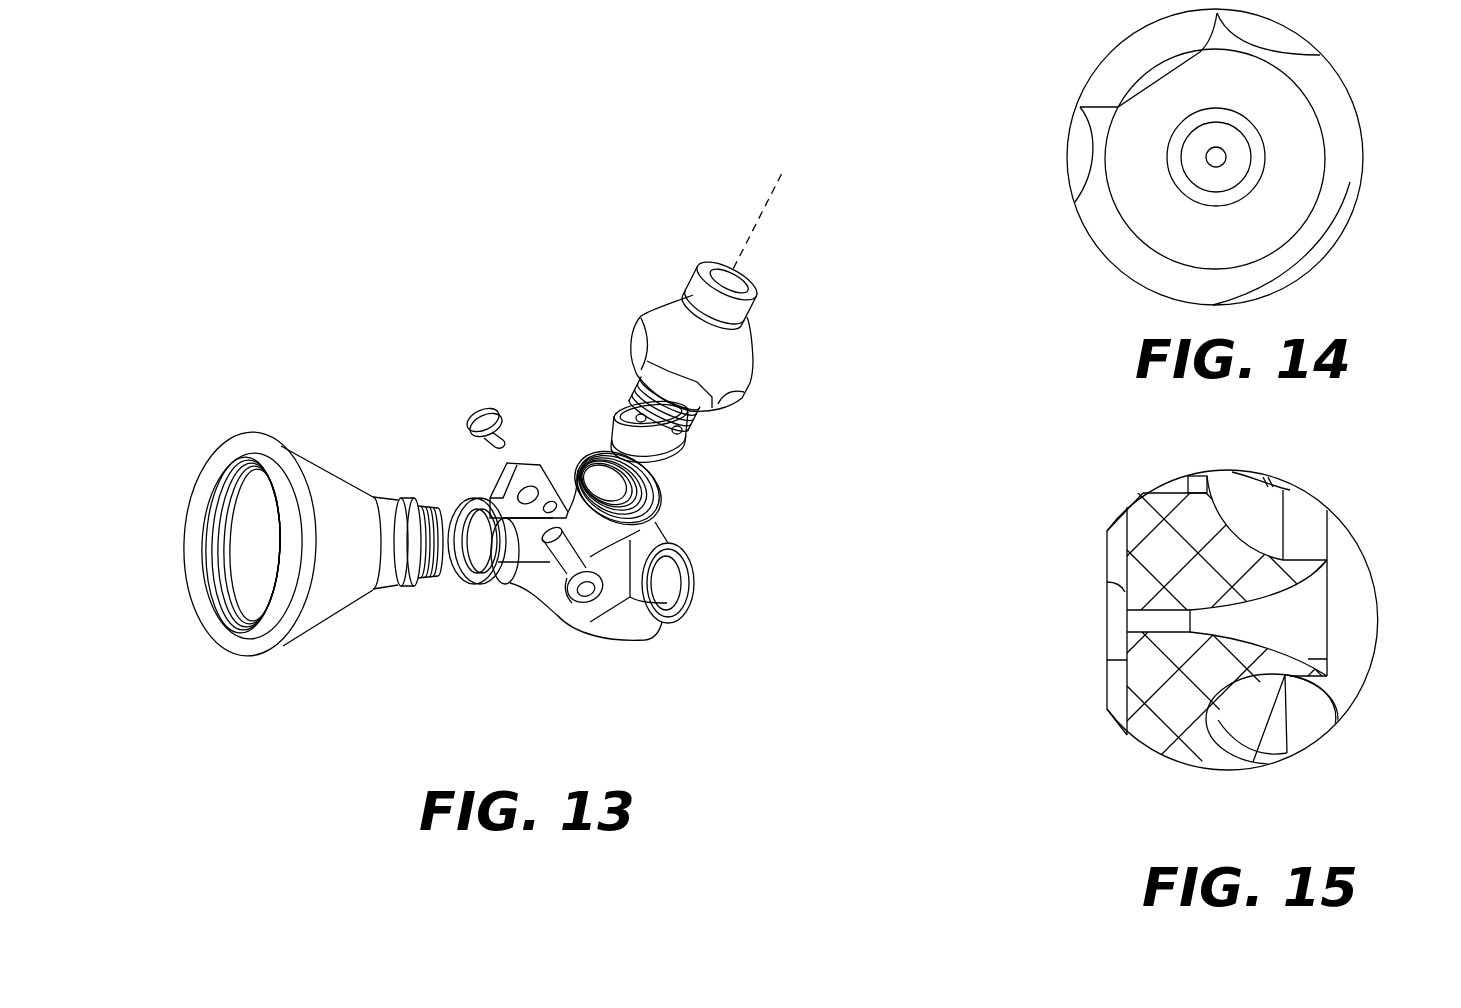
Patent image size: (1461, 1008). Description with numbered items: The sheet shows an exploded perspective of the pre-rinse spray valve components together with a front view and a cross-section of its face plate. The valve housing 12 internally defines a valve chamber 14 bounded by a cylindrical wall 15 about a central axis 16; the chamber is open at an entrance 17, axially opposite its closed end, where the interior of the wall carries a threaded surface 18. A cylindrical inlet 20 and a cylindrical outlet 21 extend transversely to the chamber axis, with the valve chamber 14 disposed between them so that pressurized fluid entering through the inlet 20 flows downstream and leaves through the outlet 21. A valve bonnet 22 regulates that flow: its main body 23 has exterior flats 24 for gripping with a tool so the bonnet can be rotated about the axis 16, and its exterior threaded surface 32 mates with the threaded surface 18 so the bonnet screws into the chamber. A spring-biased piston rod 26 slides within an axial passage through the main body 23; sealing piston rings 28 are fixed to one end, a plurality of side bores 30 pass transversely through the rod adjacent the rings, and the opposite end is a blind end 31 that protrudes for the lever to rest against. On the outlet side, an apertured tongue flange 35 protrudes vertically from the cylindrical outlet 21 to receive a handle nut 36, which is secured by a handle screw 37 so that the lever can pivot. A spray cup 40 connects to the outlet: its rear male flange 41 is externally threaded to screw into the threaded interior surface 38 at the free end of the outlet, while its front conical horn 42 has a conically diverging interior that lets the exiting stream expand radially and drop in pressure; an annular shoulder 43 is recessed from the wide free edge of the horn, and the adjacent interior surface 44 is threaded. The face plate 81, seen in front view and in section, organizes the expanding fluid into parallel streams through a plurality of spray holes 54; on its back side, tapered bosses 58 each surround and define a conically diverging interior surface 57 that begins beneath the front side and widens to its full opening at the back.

In FIG. 13, the valve housing 12 is at (569, 460).
In FIG. 13, the valve chamber 14 is at (602, 490).
In FIG. 13, the cylindrical wall 15 is at (650, 530).
In FIG. 13, the central axis 16 is at (785, 237).
In FIG. 13, the entrance 17 is at (665, 502).
In FIG. 13, the threaded surface 18 is at (632, 484).
In FIG. 13, the cylindrical inlet 20 is at (650, 620).
In FIG. 13, the cylindrical outlet 21 is at (528, 540).
In FIG. 13, the valve bonnet 22 is at (637, 314).
In FIG. 13, the main body 23 is at (740, 357).
In FIG. 13, the flats 24 is at (733, 395).
In FIG. 13, the piston rod 26 is at (704, 293).
In FIG. 13, the sealing piston rings 28 is at (683, 447).
In FIG. 13, the side bores 30 is at (640, 414).
In FIG. 13, the blind end 31 is at (759, 298).
In FIG. 13, the threaded surface 32 is at (645, 350).
In FIG. 13, the tongue flange 35 is at (507, 470).
In FIG. 13, the handle nut 36 is at (573, 608).
In FIG. 13, the handle screw 37 is at (477, 404).
In FIG. 13, the threaded interior surface 38 is at (470, 518).
In FIG. 13, the spray cup 40 is at (338, 474).
In FIG. 13, the male flange 41 is at (428, 577).
In FIG. 13, the conical horn 42 is at (322, 597).
In FIG. 13, the annular shoulder 43 is at (224, 600).
In FIG. 13, the interior surface 44 is at (230, 524).
In FIG. 14, the spray hole 54 is at (1227, 156).
In FIG. 15, the spray hole 54 is at (1157, 617).
In FIG. 15, the conically diverging interior surface 57 is at (1280, 637).
In FIG. 15, the tapered boss 58 is at (1334, 725).
In FIG. 14, the face plate 81 is at (1292, 188).
In FIG. 15, the face plate 81 is at (1157, 727).